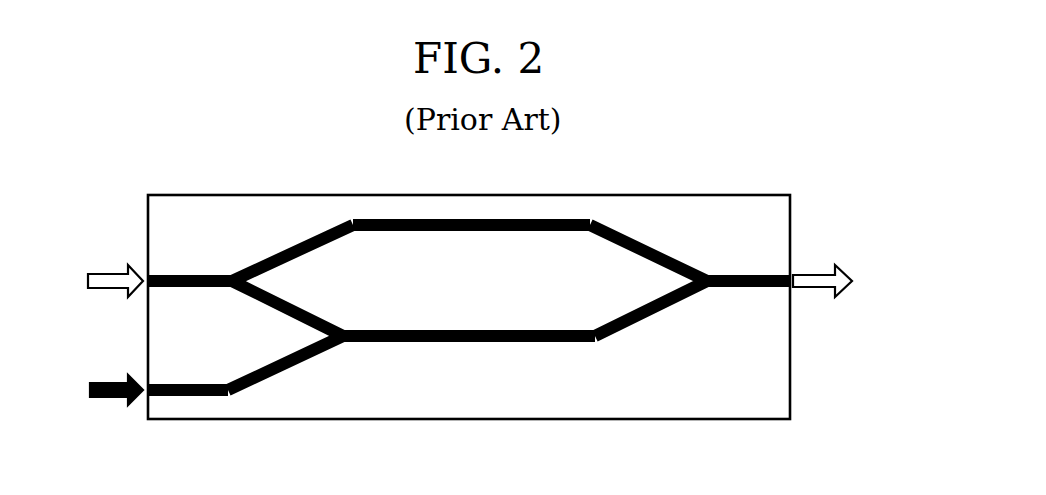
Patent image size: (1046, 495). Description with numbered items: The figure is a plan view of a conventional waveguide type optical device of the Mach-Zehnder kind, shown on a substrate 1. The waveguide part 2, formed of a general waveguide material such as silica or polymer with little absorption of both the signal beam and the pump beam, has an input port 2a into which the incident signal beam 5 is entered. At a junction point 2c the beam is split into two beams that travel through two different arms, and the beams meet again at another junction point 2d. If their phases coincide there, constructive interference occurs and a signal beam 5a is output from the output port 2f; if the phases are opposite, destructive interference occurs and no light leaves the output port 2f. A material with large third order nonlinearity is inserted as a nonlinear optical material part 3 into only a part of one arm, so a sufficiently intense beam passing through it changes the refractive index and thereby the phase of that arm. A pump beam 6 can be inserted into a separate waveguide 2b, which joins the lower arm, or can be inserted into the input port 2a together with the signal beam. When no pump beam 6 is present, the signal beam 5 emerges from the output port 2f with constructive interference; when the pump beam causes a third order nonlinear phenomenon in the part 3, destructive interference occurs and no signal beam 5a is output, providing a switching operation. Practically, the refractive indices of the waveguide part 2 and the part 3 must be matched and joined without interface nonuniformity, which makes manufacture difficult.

The microfluidic chip substrate 1 is at (272, 225).
The waveguide part 2 is at (469, 273).
The input port 2a is at (190, 264).
The separate waveguide 2b is at (188, 373).
The junction point 2c is at (290, 307).
The junction point 2d is at (648, 280).
The output port 2f is at (748, 296).
The nonlinear optical material part 3 is at (477, 342).
The signal beam 5 is at (118, 268).
The signal beam 5a is at (807, 270).
The pump beam 6 is at (125, 402).